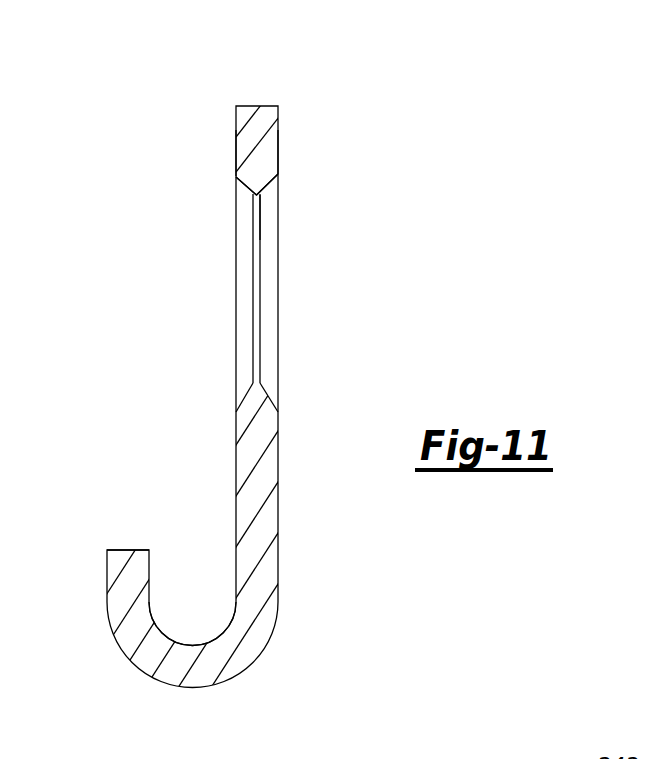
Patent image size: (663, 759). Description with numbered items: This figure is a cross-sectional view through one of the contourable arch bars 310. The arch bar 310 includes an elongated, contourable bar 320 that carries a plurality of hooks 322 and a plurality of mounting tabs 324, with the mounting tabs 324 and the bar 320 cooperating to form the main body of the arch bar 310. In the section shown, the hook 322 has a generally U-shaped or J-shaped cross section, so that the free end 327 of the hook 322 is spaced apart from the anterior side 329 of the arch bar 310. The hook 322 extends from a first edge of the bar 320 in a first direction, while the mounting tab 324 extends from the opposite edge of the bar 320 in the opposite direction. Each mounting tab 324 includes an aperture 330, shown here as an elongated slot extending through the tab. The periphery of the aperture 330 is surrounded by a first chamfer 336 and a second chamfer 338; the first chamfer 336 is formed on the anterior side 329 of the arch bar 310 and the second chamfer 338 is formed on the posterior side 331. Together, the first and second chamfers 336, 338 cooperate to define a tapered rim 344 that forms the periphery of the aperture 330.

The arch bar 310 is at (235, 76).
The bar 320 is at (255, 441).
The hook 322 is at (191, 646).
The mounting tab 324 is at (243, 114).
The free end 327 is at (124, 557).
The anterior side 329 is at (236, 152).
The aperture 330 is at (267, 322).
The posterior side 331 is at (278, 149).
The first chamfer 336 is at (248, 187).
The second chamfer 338 is at (267, 186).
The tapered rim 344 is at (256, 193).